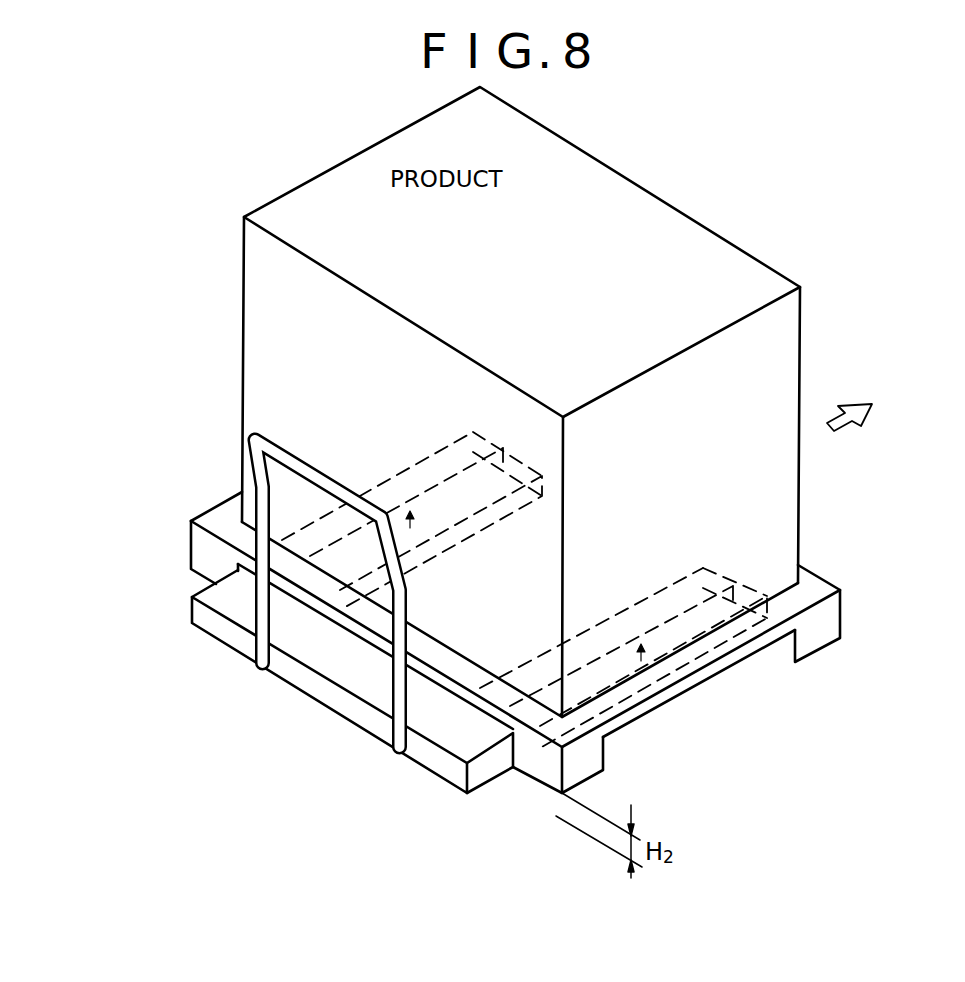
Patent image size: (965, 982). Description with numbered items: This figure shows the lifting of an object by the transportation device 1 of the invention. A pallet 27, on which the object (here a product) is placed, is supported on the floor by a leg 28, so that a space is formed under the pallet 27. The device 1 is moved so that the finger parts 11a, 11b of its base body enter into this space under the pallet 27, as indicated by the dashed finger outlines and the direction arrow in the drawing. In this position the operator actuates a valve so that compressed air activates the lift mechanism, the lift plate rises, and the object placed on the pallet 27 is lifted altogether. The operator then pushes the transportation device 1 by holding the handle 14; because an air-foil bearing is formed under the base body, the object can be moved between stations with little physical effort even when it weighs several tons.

The transportation device 1 is at (170, 617).
The handle 14 is at (250, 446).
The finger part 11a is at (493, 762).
The finger part 11b is at (295, 625).
The pallet 27 is at (817, 572).
The leg 28 is at (788, 647).